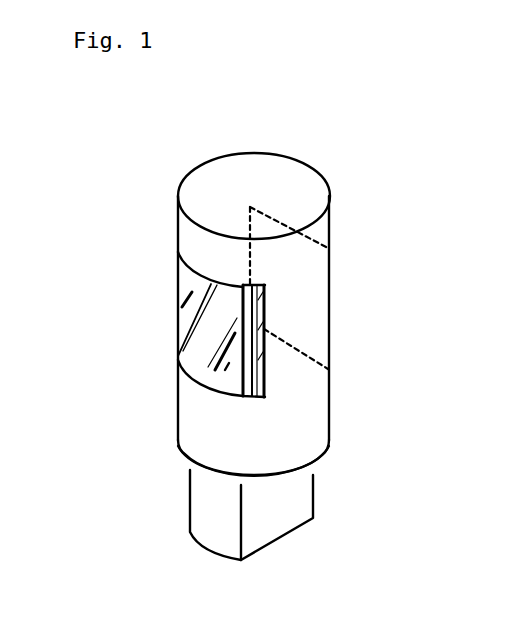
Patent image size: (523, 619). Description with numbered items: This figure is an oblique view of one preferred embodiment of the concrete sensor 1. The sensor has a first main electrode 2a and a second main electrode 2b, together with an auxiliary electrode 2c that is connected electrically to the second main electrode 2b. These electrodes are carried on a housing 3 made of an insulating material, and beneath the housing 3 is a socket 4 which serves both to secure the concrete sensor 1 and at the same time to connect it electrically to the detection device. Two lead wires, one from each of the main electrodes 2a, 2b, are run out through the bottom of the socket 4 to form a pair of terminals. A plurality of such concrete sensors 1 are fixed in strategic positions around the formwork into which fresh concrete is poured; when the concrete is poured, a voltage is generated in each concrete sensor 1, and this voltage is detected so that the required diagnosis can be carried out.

The concrete sensor 1 is at (322, 158).
The first main electrode 2a is at (329, 277).
The second main electrode 2b is at (177, 322).
The auxiliary electrode 2c is at (267, 325).
The housing 3 is at (308, 403).
The socket 4 is at (302, 495).